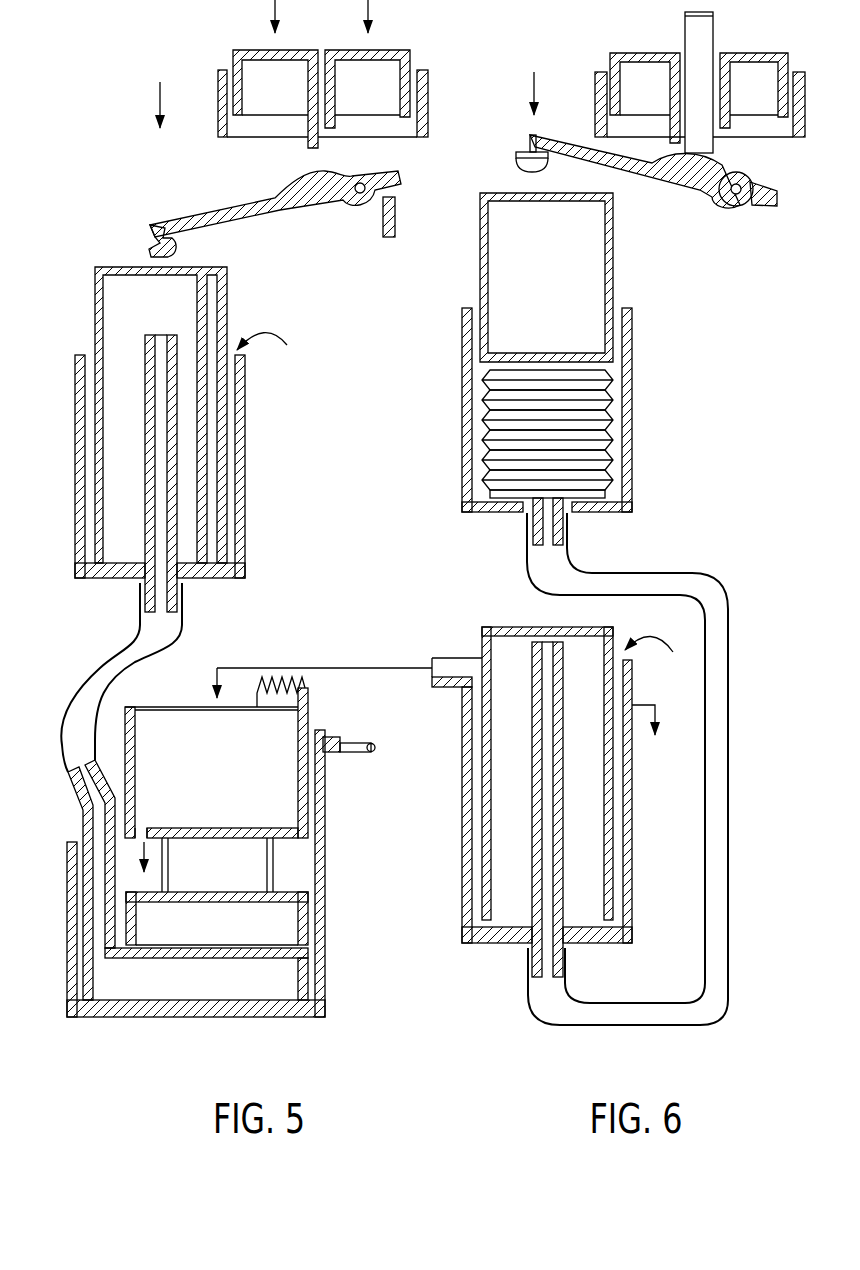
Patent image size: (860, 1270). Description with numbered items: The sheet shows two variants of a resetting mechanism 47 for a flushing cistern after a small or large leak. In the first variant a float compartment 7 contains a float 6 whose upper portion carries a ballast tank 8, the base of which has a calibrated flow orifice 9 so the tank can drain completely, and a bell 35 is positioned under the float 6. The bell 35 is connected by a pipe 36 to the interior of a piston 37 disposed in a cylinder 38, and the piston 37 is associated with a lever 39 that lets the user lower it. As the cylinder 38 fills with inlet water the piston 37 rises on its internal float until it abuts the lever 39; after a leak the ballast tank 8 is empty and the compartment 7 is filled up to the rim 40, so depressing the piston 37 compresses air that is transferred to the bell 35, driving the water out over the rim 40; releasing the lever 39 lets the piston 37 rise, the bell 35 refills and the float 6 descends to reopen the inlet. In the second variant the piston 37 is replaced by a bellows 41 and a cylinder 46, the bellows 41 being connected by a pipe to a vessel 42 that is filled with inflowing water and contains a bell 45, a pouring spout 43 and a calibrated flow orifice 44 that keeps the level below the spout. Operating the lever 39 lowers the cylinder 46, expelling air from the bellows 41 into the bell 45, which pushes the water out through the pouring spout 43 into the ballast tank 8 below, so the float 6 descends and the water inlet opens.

In FIG. 5, the float 6 is at (278, 920).
In FIG. 5, the float compartment 7 is at (325, 847).
In FIG. 5, the ballast tank 8 is at (270, 783).
In FIG. 5, the calibrated flow orifice 9 is at (144, 830).
In FIG. 5, the bell 35 is at (270, 956).
In FIG. 5, the pipe 36 is at (90, 662).
In FIG. 5, the piston 37 is at (227, 320).
In FIG. 5, the cylinder 38 is at (243, 470).
In FIG. 5, the lever 39 is at (330, 220).
In FIG. 6, the lever 39 is at (718, 213).
In FIG. 5, the rim 40 is at (115, 837).
In FIG. 6, the bellows 41 is at (580, 445).
In FIG. 6, the vessel 42 is at (628, 797).
In FIG. 6, the pouring spout 43 is at (450, 665).
In FIG. 6, the flow orifice 44 is at (630, 702).
In FIG. 6, the bell 45 is at (502, 630).
In FIG. 6, the cylinder 46 is at (612, 277).
In FIG. 5, the resetting mechanism 47 is at (125, 195).
In FIG. 6, the resetting mechanism 47 is at (727, 338).